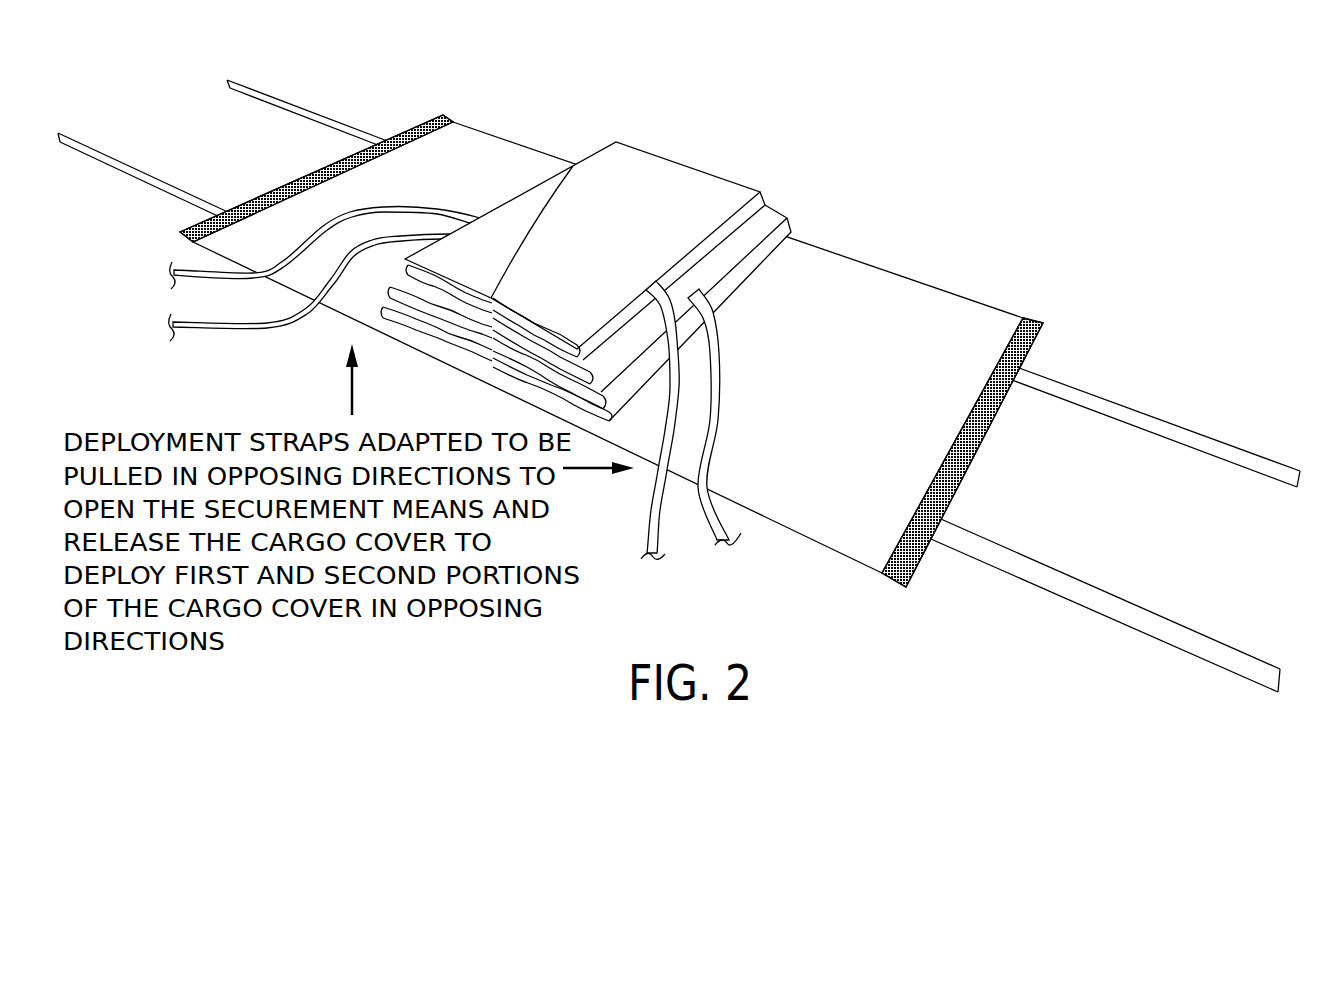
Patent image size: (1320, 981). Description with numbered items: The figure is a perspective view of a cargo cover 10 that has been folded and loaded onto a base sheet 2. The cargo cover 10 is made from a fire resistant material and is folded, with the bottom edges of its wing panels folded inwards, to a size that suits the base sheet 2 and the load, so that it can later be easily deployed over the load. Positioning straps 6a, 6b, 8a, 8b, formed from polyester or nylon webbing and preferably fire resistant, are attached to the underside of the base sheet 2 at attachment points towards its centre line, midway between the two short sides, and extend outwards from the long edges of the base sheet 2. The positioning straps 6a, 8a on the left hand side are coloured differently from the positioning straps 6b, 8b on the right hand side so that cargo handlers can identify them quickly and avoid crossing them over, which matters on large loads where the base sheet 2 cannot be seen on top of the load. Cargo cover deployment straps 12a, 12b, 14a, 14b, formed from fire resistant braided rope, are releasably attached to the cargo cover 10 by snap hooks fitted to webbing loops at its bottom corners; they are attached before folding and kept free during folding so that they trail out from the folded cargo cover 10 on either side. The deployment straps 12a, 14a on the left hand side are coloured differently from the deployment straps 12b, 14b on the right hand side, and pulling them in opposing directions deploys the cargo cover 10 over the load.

The base sheet 2 is at (905, 285).
The positioning strap 6a is at (100, 148).
The positioning strap 6b is at (263, 93).
The positioning strap 8a is at (1212, 648).
The positioning strap 8b is at (1252, 455).
The cargo cover 10 is at (718, 185).
The cargo cover deployment strap 12a is at (268, 333).
The cargo cover deployment strap 12b is at (397, 210).
The cargo cover deployment strap 14a is at (653, 497).
The cargo cover deployment strap 14b is at (715, 428).